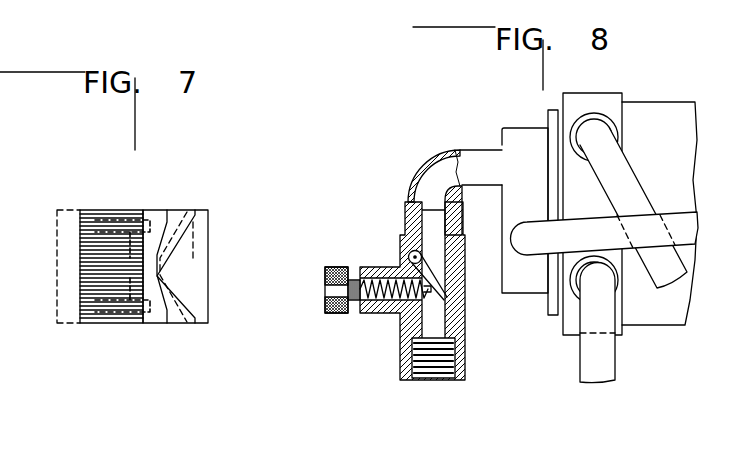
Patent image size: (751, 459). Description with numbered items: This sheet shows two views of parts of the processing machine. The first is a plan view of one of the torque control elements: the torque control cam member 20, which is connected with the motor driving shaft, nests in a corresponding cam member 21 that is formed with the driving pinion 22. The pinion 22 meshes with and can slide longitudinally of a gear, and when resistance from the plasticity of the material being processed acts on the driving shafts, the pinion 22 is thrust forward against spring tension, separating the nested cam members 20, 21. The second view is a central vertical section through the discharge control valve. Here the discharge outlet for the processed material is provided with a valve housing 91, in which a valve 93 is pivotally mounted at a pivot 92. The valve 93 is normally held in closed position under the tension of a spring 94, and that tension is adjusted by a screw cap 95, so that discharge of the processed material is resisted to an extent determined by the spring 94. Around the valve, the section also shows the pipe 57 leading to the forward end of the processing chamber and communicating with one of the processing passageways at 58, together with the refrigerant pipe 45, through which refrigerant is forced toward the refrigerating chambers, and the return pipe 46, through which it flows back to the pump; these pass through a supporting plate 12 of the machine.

In FIG. 8, the mounting plate 12 is at (620, 315).
In FIG. 7, the torque control cam member 20 is at (198, 250).
In FIG. 7, the cam member 21 is at (178, 217).
In FIG. 7, the driving pinion 22 is at (125, 210).
In FIG. 8, the pipe 45 is at (585, 350).
In FIG. 8, the pipe 46 is at (630, 190).
In FIG. 8, the pipe 57 is at (665, 215).
In FIG. 8, the communication point with processing passageway 58 is at (527, 256).
In FIG. 8, the valve housing 91 is at (463, 292).
In FIG. 8, the pivot 92 is at (410, 254).
In FIG. 8, the valve 93 is at (418, 307).
In FIG. 8, the spring 94 is at (397, 303).
In FIG. 8, the screw cap 95 is at (336, 313).